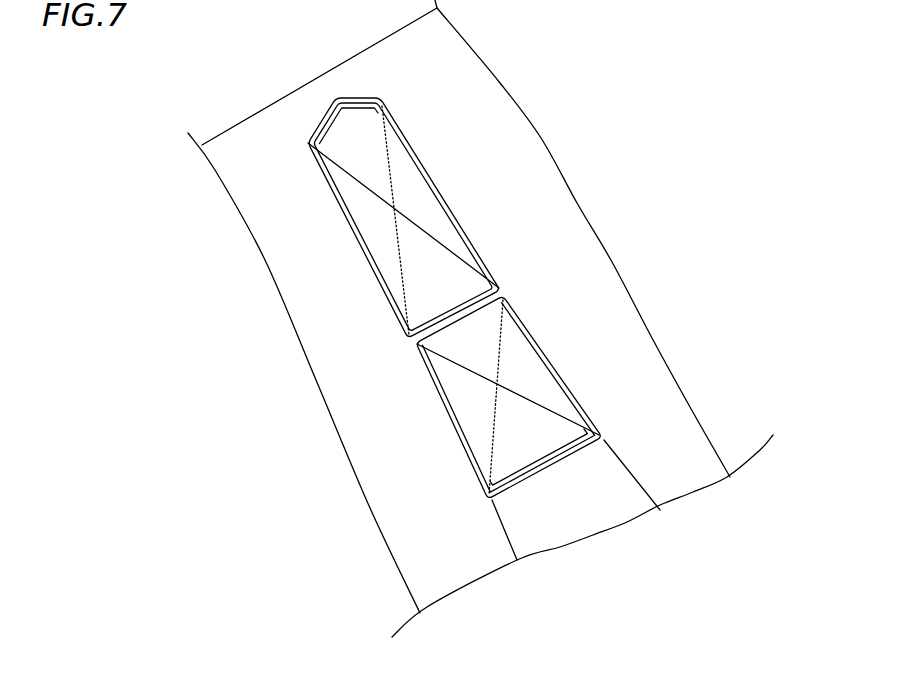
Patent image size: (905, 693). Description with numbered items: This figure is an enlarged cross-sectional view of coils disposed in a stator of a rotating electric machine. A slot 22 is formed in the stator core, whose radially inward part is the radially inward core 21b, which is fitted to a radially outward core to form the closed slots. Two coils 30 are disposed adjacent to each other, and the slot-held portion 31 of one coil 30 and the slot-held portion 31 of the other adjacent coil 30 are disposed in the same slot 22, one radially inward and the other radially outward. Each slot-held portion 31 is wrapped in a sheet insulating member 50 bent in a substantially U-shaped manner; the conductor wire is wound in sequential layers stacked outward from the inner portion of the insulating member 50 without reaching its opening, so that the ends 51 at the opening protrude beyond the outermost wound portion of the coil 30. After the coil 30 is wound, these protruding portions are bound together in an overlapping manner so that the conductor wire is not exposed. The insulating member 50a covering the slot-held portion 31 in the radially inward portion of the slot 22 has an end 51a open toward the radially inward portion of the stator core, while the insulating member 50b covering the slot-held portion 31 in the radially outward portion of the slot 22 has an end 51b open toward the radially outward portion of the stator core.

The radially inward core 21b is at (497, 121).
The slot 22 is at (628, 477).
The coil 30 is at (531, 300).
The slot-held portion 31 is at (453, 235).
The insulating member 50 is at (388, 326).
The insulating member 50a is at (367, 257).
The insulating member 50b is at (448, 423).
The end 51 is at (442, 281).
The end 51a is at (336, 99).
The end 51b is at (547, 477).